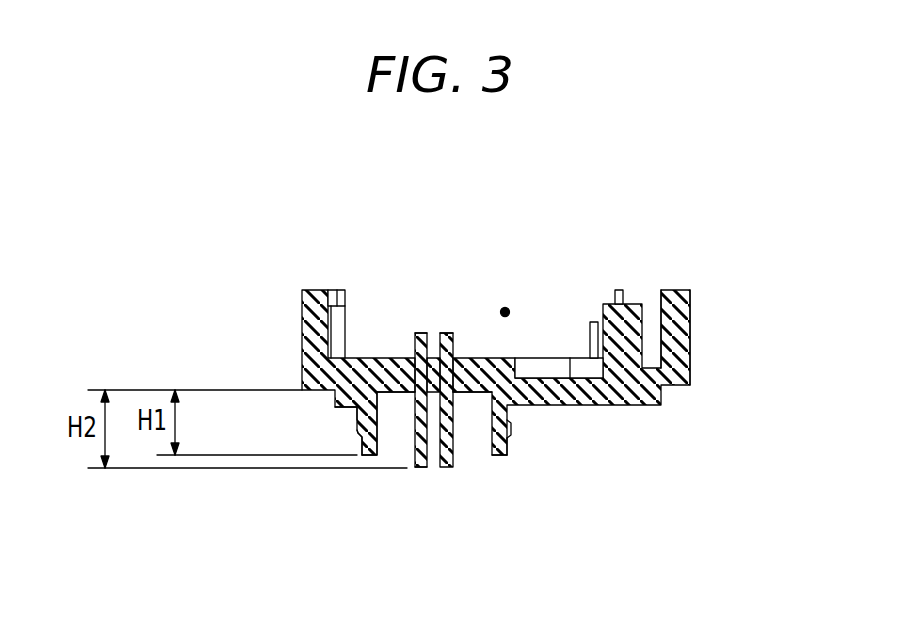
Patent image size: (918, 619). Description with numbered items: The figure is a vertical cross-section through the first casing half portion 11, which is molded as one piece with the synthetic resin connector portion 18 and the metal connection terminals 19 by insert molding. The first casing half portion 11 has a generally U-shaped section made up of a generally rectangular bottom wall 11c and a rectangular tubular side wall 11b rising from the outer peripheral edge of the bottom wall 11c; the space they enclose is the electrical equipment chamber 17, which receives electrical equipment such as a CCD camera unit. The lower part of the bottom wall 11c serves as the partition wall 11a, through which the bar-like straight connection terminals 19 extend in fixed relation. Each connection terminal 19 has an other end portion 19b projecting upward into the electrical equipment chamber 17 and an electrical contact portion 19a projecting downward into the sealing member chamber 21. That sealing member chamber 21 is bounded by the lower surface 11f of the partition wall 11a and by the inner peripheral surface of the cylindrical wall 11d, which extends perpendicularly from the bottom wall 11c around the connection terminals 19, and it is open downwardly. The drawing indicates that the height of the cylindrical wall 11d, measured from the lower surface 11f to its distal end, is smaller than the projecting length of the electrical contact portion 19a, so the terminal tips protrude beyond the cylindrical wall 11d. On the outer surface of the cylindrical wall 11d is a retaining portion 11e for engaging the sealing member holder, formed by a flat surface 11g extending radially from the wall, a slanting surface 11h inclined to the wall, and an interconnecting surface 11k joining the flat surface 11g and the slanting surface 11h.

The first casing half portion 11 is at (645, 297).
The partition wall 11a is at (373, 356).
The side wall 11b is at (690, 325).
The bottom wall 11c is at (558, 378).
The cylindrical wall 11d is at (362, 420).
The retaining portion 11e is at (358, 434).
The lower surface 11f is at (480, 395).
The flat surface 11g is at (510, 422).
The slanting surface 11h is at (507, 450).
The interconnecting surface 11k is at (512, 432).
The electrical equipment chamber 17 is at (505, 307).
The connector portion 18 is at (496, 455).
The connection terminal 19 is at (393, 455).
The electrical contact portion 19a is at (421, 468).
The other end portion 19b is at (446, 333).
The sealing member chamber 21 is at (465, 440).